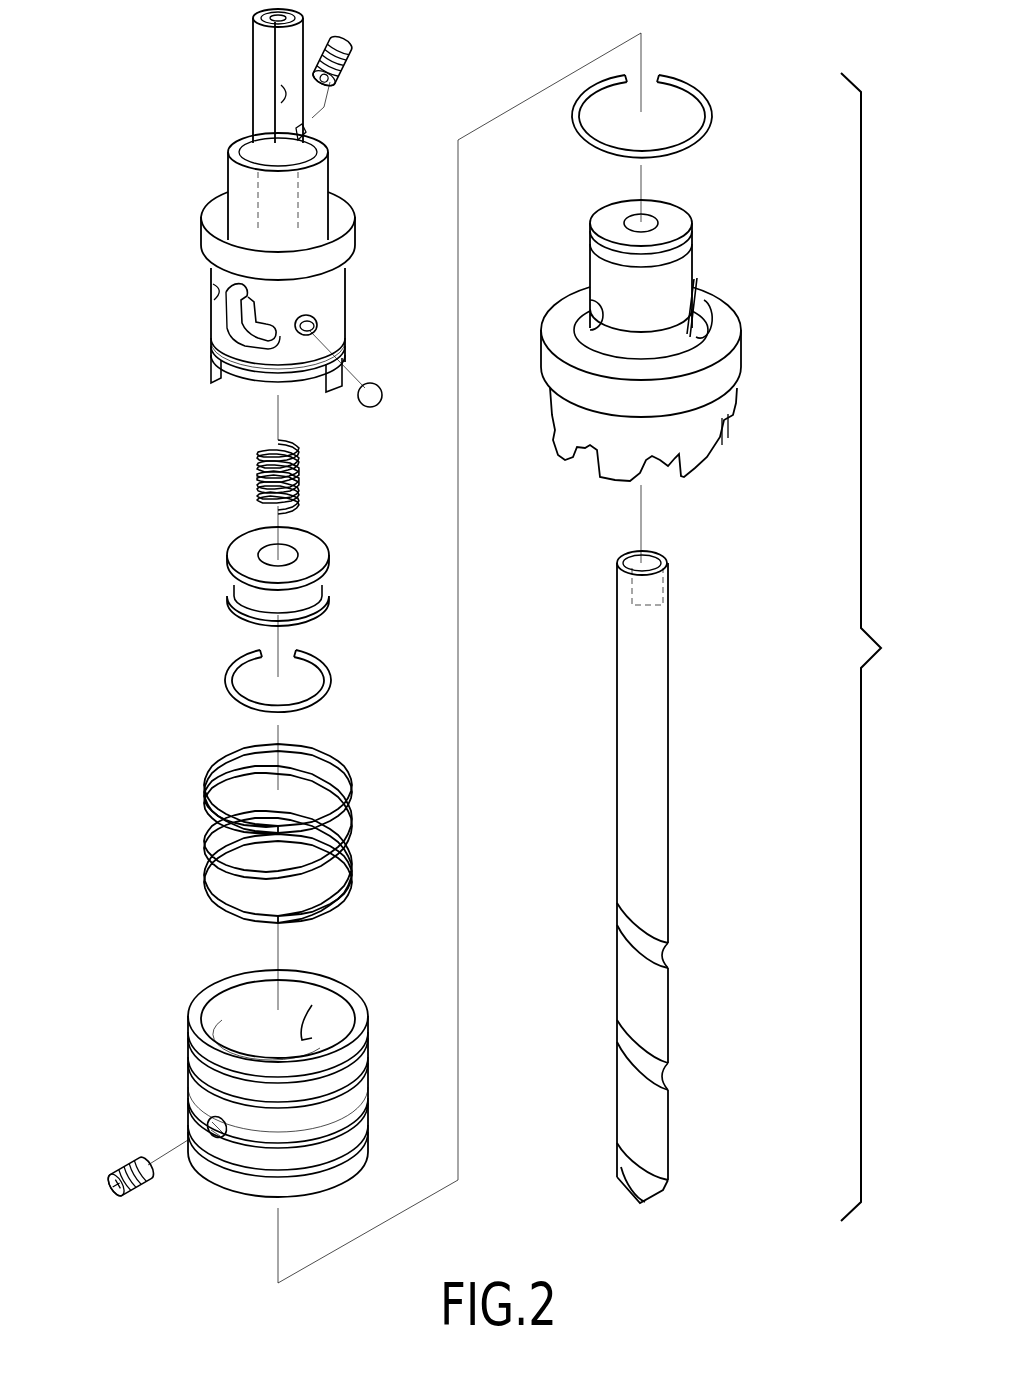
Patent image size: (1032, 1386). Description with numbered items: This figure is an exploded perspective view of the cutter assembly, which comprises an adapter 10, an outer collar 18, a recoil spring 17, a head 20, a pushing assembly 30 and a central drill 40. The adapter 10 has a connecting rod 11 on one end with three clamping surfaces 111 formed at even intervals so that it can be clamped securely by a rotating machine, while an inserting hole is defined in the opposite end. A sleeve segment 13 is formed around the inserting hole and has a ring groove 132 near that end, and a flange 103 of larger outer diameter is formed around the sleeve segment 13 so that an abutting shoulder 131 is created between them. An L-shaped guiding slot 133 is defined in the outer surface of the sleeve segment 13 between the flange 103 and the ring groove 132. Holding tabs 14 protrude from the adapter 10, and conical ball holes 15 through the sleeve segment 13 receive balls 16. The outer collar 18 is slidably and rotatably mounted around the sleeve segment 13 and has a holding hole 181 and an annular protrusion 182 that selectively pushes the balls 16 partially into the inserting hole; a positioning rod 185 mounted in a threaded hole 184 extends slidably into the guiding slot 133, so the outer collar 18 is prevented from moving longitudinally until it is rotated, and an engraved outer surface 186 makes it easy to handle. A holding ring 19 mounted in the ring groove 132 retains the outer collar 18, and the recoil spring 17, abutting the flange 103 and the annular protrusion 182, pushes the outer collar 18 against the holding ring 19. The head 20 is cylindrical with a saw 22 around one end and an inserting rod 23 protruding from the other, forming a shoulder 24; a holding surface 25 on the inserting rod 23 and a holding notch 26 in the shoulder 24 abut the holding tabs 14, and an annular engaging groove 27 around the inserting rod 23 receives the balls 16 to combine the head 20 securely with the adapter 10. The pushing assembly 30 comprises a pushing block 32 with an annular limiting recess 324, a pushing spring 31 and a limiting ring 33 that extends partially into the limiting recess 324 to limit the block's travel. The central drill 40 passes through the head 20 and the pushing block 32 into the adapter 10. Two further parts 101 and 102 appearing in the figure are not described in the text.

The adapter 10 is at (262, 214).
The connecting rod 11 is at (262, 48).
The clamping surfaces 111 is at (283, 106).
The screw hole 101 is at (308, 118).
The set screw 102 is at (342, 52).
The flange 103 is at (205, 238).
The sleeve segment 13 is at (260, 330).
The abutting shoulder 131 is at (212, 288).
The ring groove 132 is at (215, 356).
The guiding slot 133 is at (213, 321).
The holding tab 14 is at (220, 372).
The ball holes 15 is at (316, 328).
The balls 16 is at (372, 402).
The recoil spring 17 is at (350, 863).
The outer collar 18 is at (244, 1091).
The holding hole 181 is at (260, 992).
The annular protrusion 182 is at (312, 1005).
The threaded hole 184 is at (222, 1135).
The positioning rod 185 is at (118, 1192).
The engraved outer surface 186 is at (205, 1095).
The holding ring 19 is at (708, 112).
The head 20 is at (668, 360).
The saw 22 is at (703, 466).
The inserting rod 23 is at (645, 268).
The shoulder 24 is at (596, 314).
The holding surface 25 is at (700, 292).
The holding notch 26 is at (708, 318).
The engaging groove 27 is at (600, 255).
The pushing assembly 30 is at (222, 587).
The pushing spring 31 is at (300, 482).
The pushing block 32 is at (240, 569).
The limiting recess 324 is at (245, 598).
The limiting ring 33 is at (237, 698).
The central drill 40 is at (701, 1011).